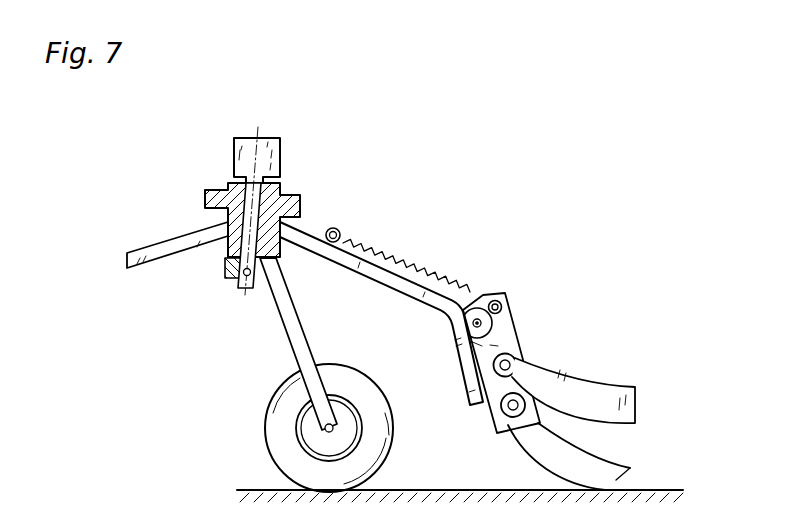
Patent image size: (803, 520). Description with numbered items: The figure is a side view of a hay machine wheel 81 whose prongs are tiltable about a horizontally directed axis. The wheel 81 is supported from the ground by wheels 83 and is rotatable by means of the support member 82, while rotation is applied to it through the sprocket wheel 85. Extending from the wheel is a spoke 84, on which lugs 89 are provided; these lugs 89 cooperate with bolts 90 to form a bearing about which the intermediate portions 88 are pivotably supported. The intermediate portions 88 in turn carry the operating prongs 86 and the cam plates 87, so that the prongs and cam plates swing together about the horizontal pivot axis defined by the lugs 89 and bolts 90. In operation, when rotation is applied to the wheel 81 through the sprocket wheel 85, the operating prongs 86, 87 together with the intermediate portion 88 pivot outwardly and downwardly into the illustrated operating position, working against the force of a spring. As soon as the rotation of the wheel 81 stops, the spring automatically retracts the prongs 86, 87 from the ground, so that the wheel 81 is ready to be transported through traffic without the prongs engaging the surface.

The wheel 81 is at (375, 172).
The support member 82 is at (270, 138).
The wheels 83 is at (268, 403).
The spoke 84 is at (305, 238).
The sprocket wheel 85 is at (287, 202).
The operating prong 86 is at (622, 467).
The cam plate 87 is at (580, 395).
The intermediate portion 88 is at (505, 348).
The lug 89 is at (466, 308).
The bolt 90 is at (420, 270).